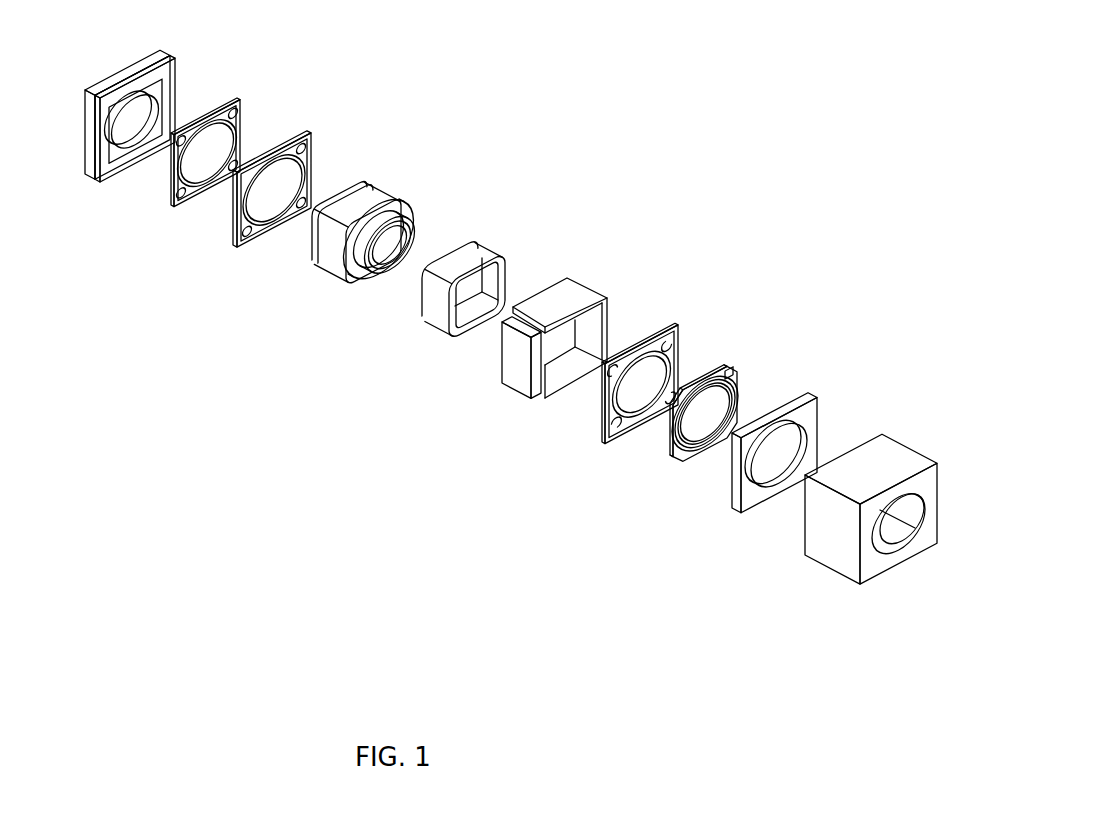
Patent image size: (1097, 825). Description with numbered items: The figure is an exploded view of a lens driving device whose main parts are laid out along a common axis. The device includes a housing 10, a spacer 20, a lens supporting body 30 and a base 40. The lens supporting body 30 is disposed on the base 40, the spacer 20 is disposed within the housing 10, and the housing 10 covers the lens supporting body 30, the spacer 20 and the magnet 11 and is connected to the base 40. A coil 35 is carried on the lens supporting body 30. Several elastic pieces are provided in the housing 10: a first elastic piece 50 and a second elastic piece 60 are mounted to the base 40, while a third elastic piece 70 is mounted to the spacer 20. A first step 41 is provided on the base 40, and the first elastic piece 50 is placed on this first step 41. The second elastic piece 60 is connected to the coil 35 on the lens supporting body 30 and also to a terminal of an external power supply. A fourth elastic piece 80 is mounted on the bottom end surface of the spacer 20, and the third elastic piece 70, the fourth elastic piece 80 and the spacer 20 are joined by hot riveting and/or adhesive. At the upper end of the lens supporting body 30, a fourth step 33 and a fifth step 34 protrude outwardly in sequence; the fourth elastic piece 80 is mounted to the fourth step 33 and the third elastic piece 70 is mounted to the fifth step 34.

The housing 10 is at (885, 453).
The magnet 11 is at (570, 298).
The spacer 20 is at (788, 410).
The lens supporting body 30 is at (367, 198).
The fourth step 33 is at (398, 208).
The fifth step 34 is at (400, 220).
The coil 35 is at (477, 253).
The base 40 is at (133, 65).
The first step 41 is at (177, 60).
The first elastic piece 50 is at (223, 108).
The second elastic piece 60 is at (300, 133).
The third elastic piece 70 is at (725, 383).
The fourth elastic piece 80 is at (660, 343).